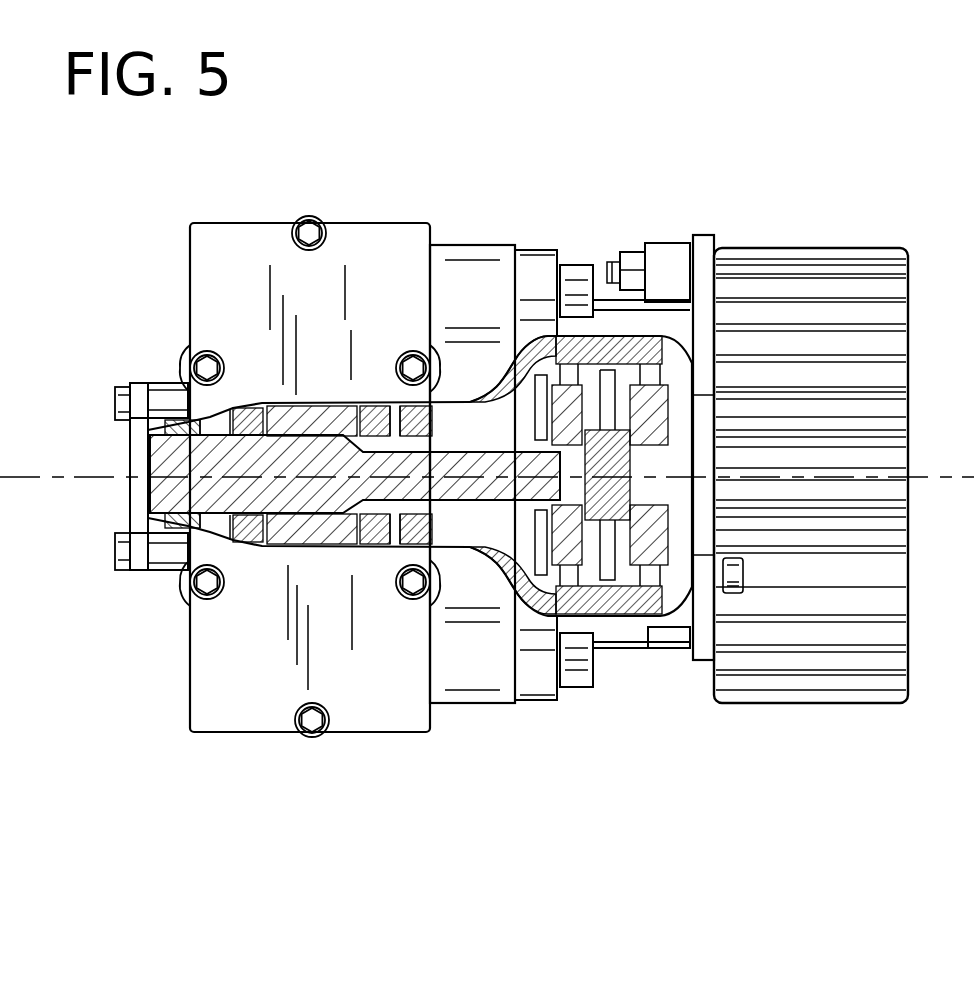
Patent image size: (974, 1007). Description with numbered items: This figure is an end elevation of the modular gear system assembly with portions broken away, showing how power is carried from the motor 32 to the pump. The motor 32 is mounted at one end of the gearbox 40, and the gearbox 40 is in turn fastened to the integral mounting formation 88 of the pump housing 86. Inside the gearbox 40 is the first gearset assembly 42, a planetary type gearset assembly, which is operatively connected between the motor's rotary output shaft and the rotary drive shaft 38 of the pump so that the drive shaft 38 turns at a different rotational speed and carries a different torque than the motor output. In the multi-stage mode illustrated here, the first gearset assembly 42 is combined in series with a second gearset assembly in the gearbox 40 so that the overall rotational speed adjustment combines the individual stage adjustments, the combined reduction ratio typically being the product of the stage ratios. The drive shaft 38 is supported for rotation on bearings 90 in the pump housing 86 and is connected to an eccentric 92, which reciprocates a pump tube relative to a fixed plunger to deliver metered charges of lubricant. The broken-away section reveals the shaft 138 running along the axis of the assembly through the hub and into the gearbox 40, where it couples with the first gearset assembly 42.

The motor 32 is at (798, 248).
The drive shaft 38 is at (290, 410).
The gearbox 40 is at (638, 653).
The first gearset assembly 42 is at (470, 403).
The pump housing 86 is at (362, 733).
The mounting formation 88 is at (492, 248).
The bearings 90 is at (175, 423).
The eccentric 92 is at (305, 410).
The drive shaft 138 is at (468, 455).